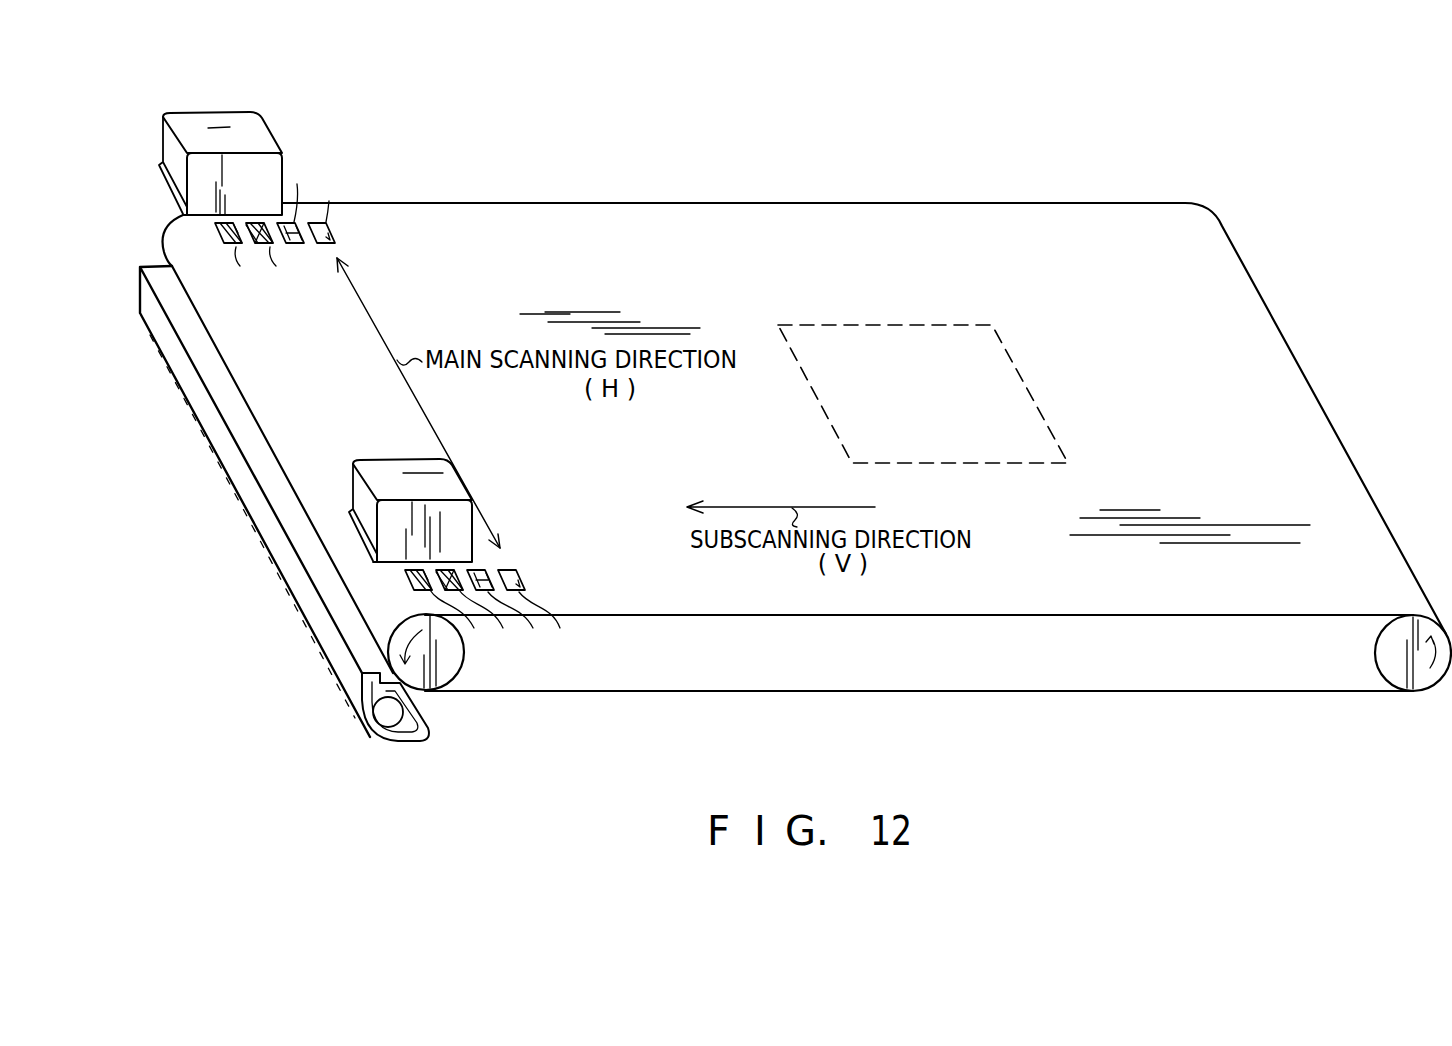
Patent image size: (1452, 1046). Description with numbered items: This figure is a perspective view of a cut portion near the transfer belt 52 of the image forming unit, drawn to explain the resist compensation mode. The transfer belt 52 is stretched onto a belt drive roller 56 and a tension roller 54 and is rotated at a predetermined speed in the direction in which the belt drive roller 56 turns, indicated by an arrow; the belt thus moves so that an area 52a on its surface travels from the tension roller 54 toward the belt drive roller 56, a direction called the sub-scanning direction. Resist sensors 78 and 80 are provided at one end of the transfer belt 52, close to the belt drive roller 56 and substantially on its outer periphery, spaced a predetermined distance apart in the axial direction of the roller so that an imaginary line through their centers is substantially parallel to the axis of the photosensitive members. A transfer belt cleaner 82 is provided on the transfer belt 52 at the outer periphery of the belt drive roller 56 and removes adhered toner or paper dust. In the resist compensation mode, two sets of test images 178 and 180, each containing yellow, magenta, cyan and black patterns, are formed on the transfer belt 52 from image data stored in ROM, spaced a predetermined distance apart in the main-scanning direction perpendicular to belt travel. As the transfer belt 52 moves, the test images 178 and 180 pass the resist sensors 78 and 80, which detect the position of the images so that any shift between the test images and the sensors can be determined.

The transfer belt 52 is at (762, 220).
The area 52a is at (1025, 417).
The tension roller 54 is at (1423, 682).
The belt drive roller 56 is at (433, 687).
The resist sensor 78 is at (378, 470).
The resist sensor 80 is at (209, 118).
The transfer belt cleaner 82 is at (388, 718).
The test images 178 is at (480, 560).
The test images 180 is at (227, 296).